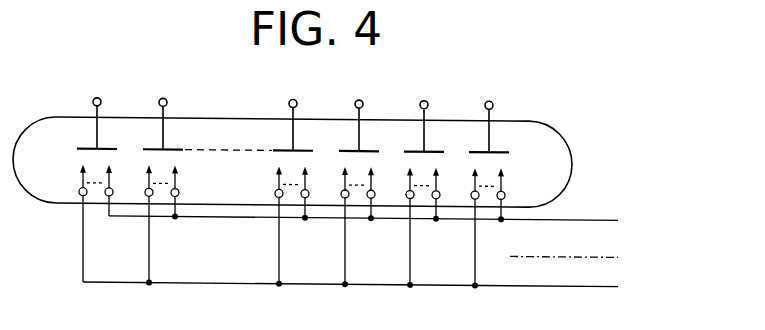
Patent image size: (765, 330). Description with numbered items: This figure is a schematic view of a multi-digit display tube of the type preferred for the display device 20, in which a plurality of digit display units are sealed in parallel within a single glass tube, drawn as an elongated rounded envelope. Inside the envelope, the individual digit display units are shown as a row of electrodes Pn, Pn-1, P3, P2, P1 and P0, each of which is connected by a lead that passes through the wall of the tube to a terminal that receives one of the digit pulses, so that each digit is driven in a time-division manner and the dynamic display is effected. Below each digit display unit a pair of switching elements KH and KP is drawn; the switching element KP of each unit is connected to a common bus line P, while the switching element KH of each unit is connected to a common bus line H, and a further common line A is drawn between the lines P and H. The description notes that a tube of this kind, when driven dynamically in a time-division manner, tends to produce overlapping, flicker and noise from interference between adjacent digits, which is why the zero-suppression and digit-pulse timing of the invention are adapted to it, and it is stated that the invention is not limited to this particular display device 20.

The display device 20 is at (556, 123).
The display electrode Pn is at (107, 148).
The display electrode Pn-1 is at (173, 148).
The display electrode P3 is at (303, 148).
The display electrode P2 is at (369, 148).
The display electrode P1 is at (434, 148).
The display electrode P0 is at (499, 148).
The hold switch KH is at (465, 221).
The pulse switch KP is at (512, 168).
The pulse bus line P is at (373, 219).
The A bus line A is at (575, 257).
The hold bus line H is at (362, 285).